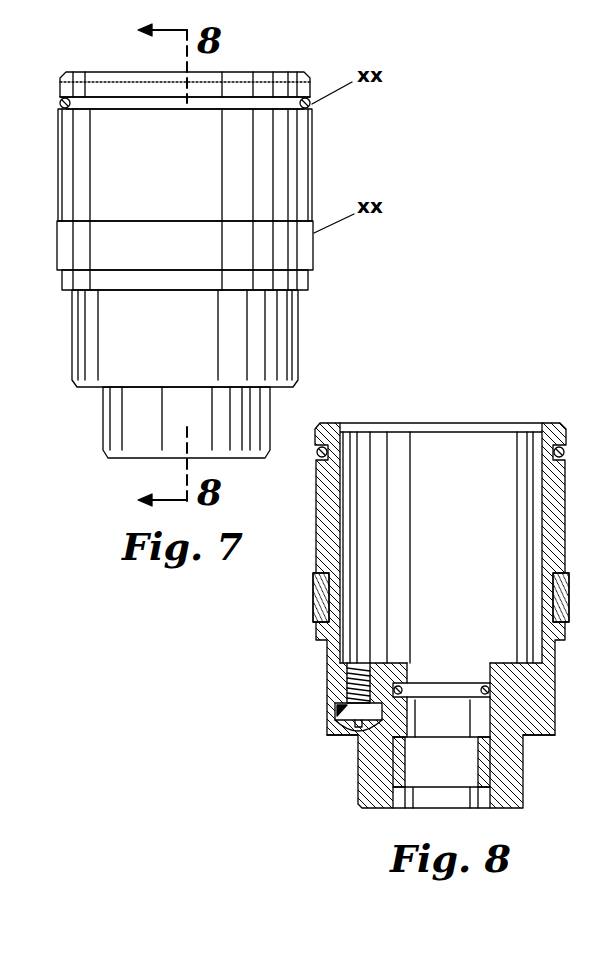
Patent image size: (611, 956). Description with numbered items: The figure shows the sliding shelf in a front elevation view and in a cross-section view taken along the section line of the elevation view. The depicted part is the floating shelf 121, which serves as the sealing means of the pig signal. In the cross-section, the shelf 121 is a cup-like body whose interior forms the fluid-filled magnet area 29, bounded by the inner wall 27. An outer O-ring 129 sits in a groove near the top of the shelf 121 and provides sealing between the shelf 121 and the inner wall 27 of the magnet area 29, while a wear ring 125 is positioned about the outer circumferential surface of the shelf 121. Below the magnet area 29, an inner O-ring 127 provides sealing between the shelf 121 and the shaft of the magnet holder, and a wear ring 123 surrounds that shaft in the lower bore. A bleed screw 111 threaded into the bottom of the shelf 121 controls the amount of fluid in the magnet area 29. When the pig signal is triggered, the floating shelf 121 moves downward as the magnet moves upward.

In FIG. 8, the inner wall 27 is at (540, 475).
In FIG. 8, the fluid-filled magnet area 29 is at (452, 528).
In FIG. 8, the bleed screw 111 is at (345, 727).
In FIG. 7, the floating shelf 121 is at (119, 462).
In FIG. 8, the floating shelf 121 is at (520, 807).
In FIG. 8, the wear ring 123 is at (395, 770).
In FIG. 8, the wear ring 125 is at (313, 602).
In FIG. 8, the inner O-ring 127 is at (400, 692).
In FIG. 8, the outer O-ring 129 is at (318, 456).